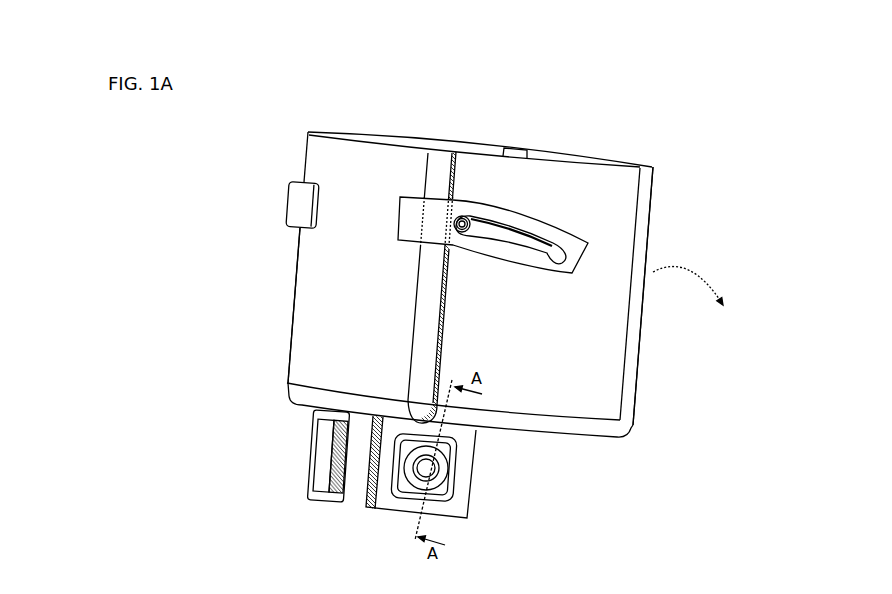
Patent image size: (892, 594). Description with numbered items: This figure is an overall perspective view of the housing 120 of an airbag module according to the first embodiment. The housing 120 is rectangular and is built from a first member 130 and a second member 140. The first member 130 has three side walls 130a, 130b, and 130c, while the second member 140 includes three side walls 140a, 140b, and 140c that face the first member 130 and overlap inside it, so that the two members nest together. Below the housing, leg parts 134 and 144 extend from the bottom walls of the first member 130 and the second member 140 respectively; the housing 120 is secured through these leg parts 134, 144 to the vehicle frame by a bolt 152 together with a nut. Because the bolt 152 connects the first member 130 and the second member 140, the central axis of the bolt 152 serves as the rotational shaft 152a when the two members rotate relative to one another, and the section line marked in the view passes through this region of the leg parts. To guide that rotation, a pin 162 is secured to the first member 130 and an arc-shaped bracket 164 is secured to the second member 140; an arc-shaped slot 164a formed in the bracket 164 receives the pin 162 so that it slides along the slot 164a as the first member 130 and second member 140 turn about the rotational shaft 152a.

The housing 120 is at (700, 128).
The first member 130 is at (647, 355).
The side wall 130a is at (627, 198).
The side wall 130b is at (577, 155).
The side wall 130c is at (507, 150).
The leg part 134 is at (457, 477).
The second member 140 is at (284, 274).
The side wall 140a is at (472, 148).
The side wall 140b is at (377, 153).
The side wall 140c is at (443, 152).
The leg part 144 is at (355, 498).
The bolt 152 is at (457, 465).
The rotational shaft 152a is at (310, 448).
The pin 162 is at (463, 233).
The bracket 164 is at (477, 249).
The arc-shaped slot 164a is at (537, 233).